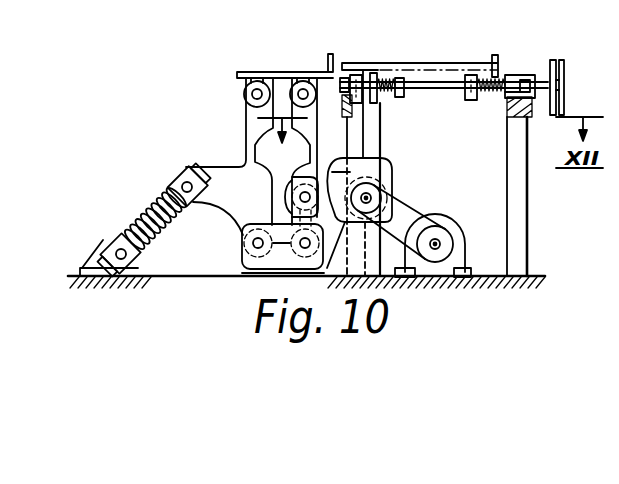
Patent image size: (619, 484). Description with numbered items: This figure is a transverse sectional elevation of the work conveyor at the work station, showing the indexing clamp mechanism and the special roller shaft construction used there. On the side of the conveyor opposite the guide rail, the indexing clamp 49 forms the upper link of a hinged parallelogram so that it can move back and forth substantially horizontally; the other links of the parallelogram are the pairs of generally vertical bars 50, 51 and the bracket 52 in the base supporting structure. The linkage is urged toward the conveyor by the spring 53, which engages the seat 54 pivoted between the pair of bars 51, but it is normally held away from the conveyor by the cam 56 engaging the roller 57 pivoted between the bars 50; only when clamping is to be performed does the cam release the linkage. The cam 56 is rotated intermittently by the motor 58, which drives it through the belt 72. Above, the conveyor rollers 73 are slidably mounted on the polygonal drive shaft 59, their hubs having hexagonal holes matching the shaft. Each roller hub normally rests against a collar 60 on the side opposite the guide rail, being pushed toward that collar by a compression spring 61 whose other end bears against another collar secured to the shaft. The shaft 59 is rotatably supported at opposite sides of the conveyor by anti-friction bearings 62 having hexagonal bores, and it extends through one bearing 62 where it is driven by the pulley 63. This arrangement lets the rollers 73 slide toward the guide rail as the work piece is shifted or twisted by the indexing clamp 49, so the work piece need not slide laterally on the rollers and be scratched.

The indexing clamp 49 is at (281, 72).
The vertical bars 50 is at (309, 127).
The vertical bars 51 is at (246, 124).
The bracket 52 is at (242, 258).
The spring 53 is at (158, 202).
The seat 54 is at (173, 168).
The cam 56 is at (381, 175).
The roller 57 is at (285, 195).
The motor 58 is at (466, 232).
The polygonal drive shaft 59 is at (437, 86).
The collar 60 is at (462, 93).
The compression spring 61 is at (384, 94).
The bearing 62 is at (513, 75).
The hand wheel 63 is at (564, 72).
The drive belt 72 is at (402, 200).
The conveyor roller 73 is at (373, 104).